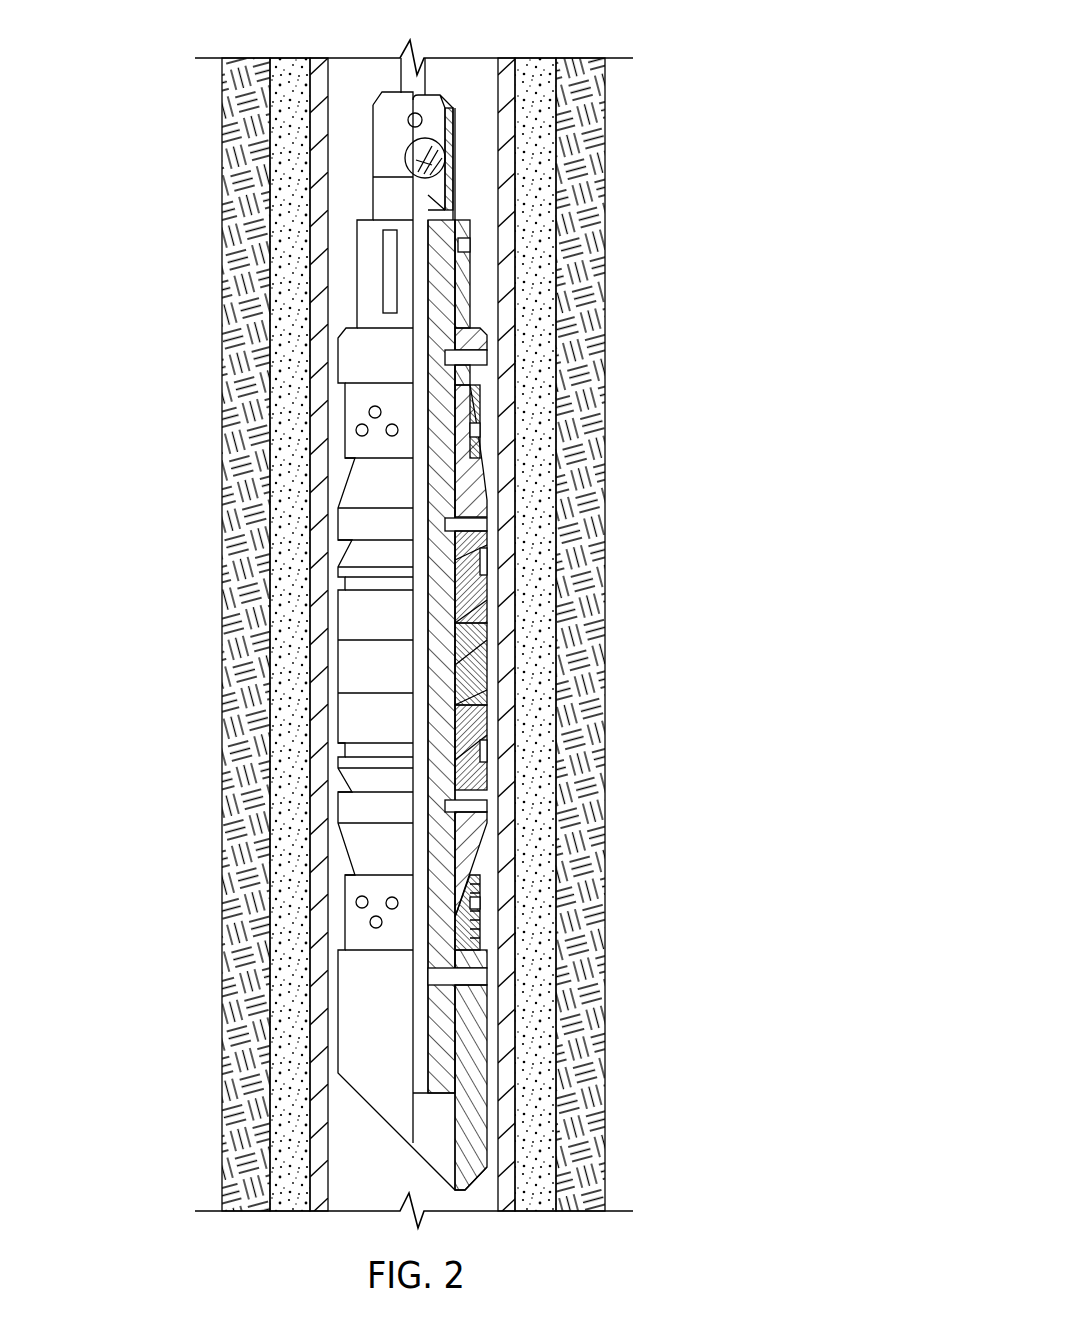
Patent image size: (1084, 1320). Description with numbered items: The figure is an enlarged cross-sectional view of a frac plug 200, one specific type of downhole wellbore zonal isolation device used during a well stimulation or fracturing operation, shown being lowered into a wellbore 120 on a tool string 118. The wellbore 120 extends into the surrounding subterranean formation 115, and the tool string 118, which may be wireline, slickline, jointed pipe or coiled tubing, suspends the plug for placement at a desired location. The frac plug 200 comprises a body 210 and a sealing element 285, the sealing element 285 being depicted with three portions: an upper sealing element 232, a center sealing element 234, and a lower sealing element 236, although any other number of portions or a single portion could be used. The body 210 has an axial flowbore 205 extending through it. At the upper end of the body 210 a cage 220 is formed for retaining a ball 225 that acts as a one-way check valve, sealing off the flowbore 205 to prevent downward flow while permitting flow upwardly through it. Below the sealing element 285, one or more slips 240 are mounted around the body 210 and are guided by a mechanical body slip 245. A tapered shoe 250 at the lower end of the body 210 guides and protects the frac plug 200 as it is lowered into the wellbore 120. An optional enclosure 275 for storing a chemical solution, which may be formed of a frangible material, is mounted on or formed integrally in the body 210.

The frac plug 200 is at (481, 35).
The tool string 118 is at (427, 72).
The ball 225 is at (420, 147).
The cage 220 is at (440, 171).
The wellbore 120 is at (345, 168).
The enclosure 275 is at (397, 266).
The body 210 is at (453, 300).
The axial flowbore 205 is at (420, 480).
The upper sealing element 232 is at (475, 610).
The center sealing element 234 is at (478, 668).
The lower sealing element 236 is at (480, 727).
The sealing element 285 is at (623, 660).
The mechanical body slip 245 is at (470, 850).
The slips 240 is at (470, 932).
The subterranean formation 115 is at (587, 1030).
The tapered shoe 250 is at (472, 1130).